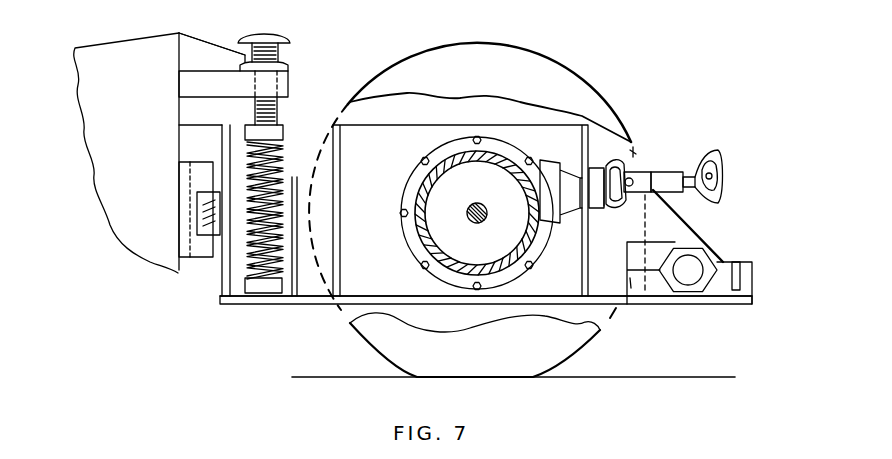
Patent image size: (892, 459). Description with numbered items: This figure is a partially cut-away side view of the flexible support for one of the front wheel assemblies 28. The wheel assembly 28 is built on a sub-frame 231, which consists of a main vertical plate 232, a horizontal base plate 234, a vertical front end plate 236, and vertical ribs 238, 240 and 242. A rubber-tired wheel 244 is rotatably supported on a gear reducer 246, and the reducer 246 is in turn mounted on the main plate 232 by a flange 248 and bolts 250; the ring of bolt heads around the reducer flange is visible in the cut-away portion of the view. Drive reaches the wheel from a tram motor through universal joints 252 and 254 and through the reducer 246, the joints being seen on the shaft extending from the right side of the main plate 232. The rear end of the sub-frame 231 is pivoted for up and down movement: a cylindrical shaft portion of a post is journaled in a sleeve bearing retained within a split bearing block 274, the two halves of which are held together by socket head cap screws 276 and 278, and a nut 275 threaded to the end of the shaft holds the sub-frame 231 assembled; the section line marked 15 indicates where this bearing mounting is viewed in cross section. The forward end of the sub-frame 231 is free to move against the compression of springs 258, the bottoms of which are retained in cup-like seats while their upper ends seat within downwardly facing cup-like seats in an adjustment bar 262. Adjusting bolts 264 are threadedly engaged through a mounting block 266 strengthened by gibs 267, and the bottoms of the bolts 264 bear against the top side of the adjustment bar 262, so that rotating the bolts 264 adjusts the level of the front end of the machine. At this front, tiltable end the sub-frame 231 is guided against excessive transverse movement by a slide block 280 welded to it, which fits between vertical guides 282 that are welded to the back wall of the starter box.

The front wheel assembly 28 is at (630, 102).
The section line 15- 15 is at (609, 278).
The sub-frame 231 is at (233, 310).
The main vertical plate 232 is at (392, 164).
The horizontal base plate 234 is at (303, 298).
The vertical front end plate 236 is at (227, 247).
The vertical rib 238 is at (288, 98).
The vertical rib 240 is at (347, 140).
The vertical rib 242 is at (623, 140).
The rubber-tired wheel 244 is at (553, 83).
The gear reducer 246 is at (403, 214).
The flange 248 is at (512, 150).
The bolts 250 is at (482, 137).
The universal joint 252 is at (713, 155).
The universal joint 254 is at (635, 155).
The springs 258 is at (215, 212).
The adjustment bar 262 is at (283, 137).
The adjusting bolts 264 is at (282, 40).
The mounting block 266 is at (290, 72).
The gibs 267 is at (222, 57).
The split bearing block 274 is at (753, 293).
The nut 275 is at (693, 291).
The socket head cap screw 276 is at (652, 250).
The socket head cap screw 278 is at (733, 262).
The slide block 280 is at (205, 207).
The vertical guides 282 is at (200, 167).